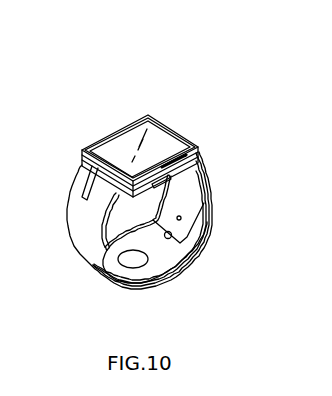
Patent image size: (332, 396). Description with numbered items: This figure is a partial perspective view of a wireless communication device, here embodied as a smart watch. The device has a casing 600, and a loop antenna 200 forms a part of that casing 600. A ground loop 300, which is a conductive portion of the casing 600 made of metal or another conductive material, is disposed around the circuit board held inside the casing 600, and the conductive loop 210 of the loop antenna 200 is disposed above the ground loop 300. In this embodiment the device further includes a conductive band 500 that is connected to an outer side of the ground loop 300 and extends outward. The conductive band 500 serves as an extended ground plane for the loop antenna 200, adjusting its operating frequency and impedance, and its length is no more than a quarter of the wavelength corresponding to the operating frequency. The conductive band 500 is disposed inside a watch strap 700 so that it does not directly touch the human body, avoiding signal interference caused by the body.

The loop antenna 200 is at (140, 128).
The conductive loop 210 is at (124, 114).
The ground loop 300 is at (177, 146).
The conductive band 500 is at (66, 212).
The casing 600 is at (207, 150).
The watch strap 700 is at (95, 267).